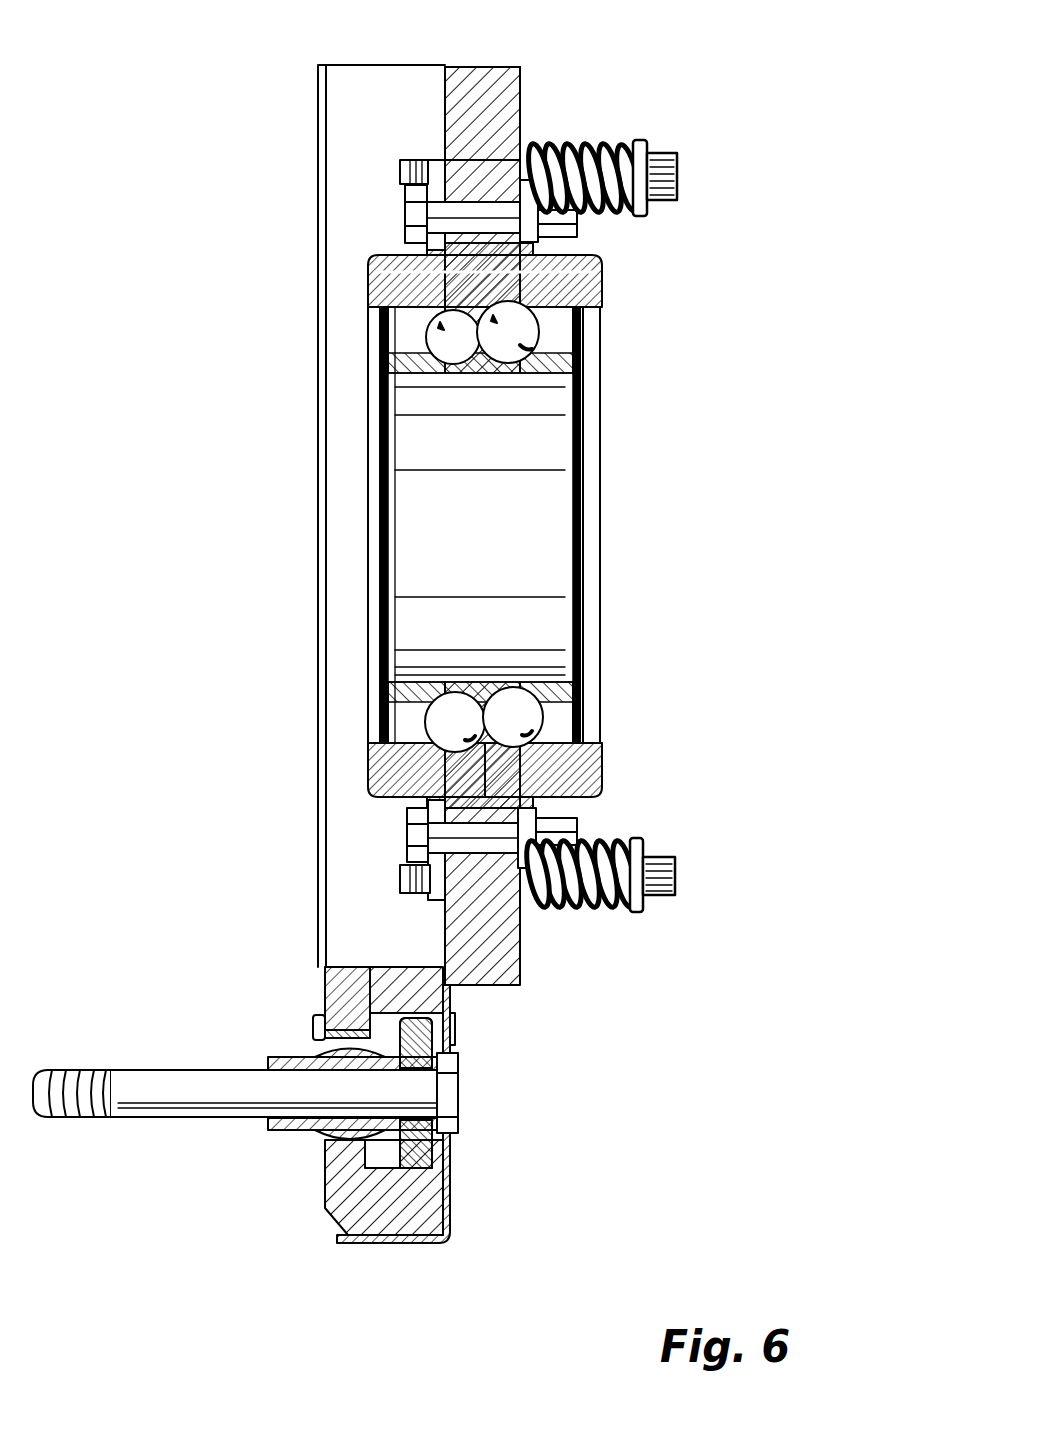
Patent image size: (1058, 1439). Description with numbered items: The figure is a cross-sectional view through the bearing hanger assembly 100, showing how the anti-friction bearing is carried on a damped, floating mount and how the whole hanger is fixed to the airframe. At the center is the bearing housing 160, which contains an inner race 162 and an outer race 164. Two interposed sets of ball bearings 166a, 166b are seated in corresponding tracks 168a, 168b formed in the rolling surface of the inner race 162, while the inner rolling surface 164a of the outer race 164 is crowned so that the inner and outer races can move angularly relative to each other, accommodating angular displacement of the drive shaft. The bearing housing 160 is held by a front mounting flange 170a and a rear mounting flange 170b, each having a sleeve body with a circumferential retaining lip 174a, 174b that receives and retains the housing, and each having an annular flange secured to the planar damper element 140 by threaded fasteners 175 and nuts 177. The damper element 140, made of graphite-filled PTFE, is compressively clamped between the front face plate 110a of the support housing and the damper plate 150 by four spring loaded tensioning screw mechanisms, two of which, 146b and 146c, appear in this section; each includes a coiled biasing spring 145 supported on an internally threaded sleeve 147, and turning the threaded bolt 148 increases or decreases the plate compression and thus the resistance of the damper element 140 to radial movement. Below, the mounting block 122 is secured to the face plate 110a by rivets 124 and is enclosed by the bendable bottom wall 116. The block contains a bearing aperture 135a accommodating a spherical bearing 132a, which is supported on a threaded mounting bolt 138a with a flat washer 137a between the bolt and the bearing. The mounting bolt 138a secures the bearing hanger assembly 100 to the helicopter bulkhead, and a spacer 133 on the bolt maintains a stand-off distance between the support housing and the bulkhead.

The bearing hanger assembly 100 is at (797, 136).
The front face plate 110a is at (455, 1005).
The bendable bottom wall 116 is at (420, 1244).
The mounting block 122 is at (345, 1215).
The rivets 124 is at (313, 1030).
The spherical bearing 132a is at (313, 1130).
The spacers 133 is at (270, 1130).
The bearing aperture 135a is at (392, 1168).
The flat washer 137a is at (445, 1142).
The threaded mounting bolt 138a is at (148, 1087).
The planar damper element 140 is at (500, 68).
The coiled biasing spring 145 is at (565, 142).
The spring loaded tensioning screw mechanism 146b is at (664, 231).
The spring loaded tensioning screw mechanism 146c is at (612, 915).
The internally threaded sleeve 147 is at (668, 153).
The threaded bolt 148 is at (414, 160).
The damper plate 150 is at (540, 980).
The bearing housing 160 is at (368, 517).
The inner race 162 is at (545, 365).
The outer race 164 is at (390, 718).
The inner rolling surface of outer race 164a is at (590, 700).
The set of ball bearings 166a is at (432, 342).
The set of ball bearings 166b is at (530, 337).
The track 168a is at (440, 692).
The track 168b is at (512, 690).
The front mounting flange 170a is at (602, 274).
The rear mounting flange 170b is at (372, 258).
The circumferential retaining lip 174a is at (600, 760).
The circumferential retaining lip 174b is at (372, 765).
The fasteners 175 is at (405, 215).
The nuts 177 is at (565, 822).